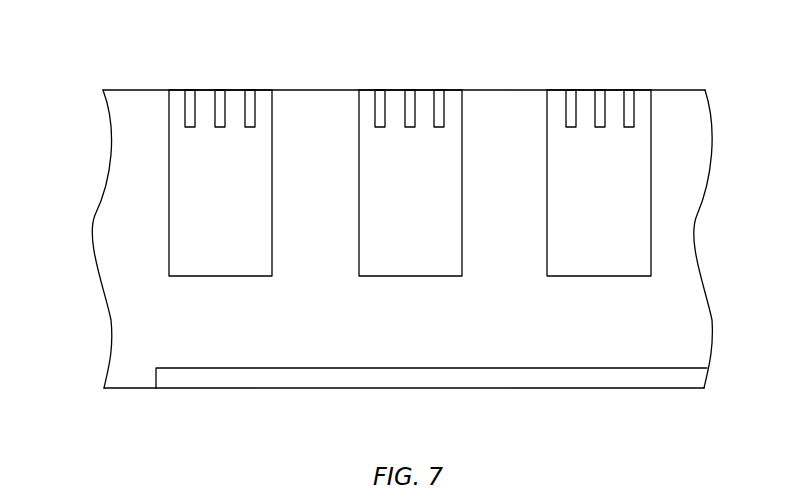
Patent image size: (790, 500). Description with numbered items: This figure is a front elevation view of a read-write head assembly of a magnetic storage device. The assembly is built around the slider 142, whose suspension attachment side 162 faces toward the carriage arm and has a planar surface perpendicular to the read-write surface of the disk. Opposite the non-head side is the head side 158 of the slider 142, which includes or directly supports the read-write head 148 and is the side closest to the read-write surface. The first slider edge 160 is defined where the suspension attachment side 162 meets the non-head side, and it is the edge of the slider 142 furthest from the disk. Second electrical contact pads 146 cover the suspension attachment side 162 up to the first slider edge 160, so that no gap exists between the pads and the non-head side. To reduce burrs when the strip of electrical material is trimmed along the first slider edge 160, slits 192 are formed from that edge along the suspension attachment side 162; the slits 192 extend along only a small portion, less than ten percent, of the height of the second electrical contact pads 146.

The slider 142 is at (589, 353).
The second electrical contact pad 146 is at (224, 253).
The read-write head 148 is at (330, 377).
The head side 158 is at (140, 389).
The first slider edge 160 is at (298, 90).
The suspension attachment side 162 is at (137, 315).
The slits 192 is at (192, 97).